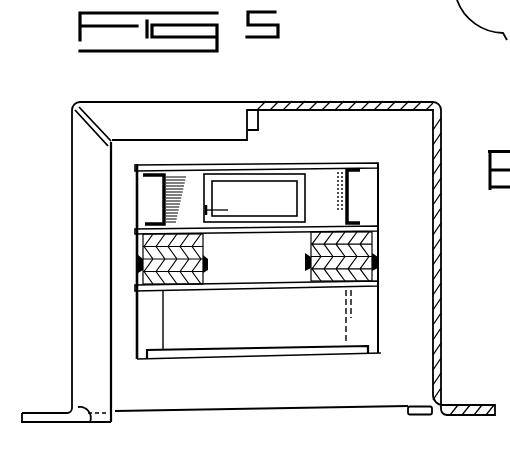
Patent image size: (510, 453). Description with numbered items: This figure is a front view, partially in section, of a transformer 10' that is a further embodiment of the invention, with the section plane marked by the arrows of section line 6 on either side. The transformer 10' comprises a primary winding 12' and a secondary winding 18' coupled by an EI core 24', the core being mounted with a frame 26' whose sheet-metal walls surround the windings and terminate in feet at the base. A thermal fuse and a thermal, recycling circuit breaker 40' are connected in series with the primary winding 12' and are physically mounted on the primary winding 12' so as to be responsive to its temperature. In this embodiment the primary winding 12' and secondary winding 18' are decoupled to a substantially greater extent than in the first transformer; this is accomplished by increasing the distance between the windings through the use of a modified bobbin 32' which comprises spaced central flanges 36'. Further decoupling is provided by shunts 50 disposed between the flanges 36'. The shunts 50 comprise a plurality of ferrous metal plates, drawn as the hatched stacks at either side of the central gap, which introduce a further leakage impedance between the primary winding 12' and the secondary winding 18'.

The section line 6- 6 is at (51, 212).
The transformer 10' is at (258, 231).
The primary winding 12' is at (256, 245).
The secondary winding 18' is at (259, 363).
The EI core 24' is at (375, 242).
The frame 26' is at (191, 104).
The modified bobbin 32' is at (211, 304).
The spaced central flanges 36' is at (385, 253).
The thermal recycling circuit breaker 40' is at (259, 172).
The shunts 50 is at (173, 288).